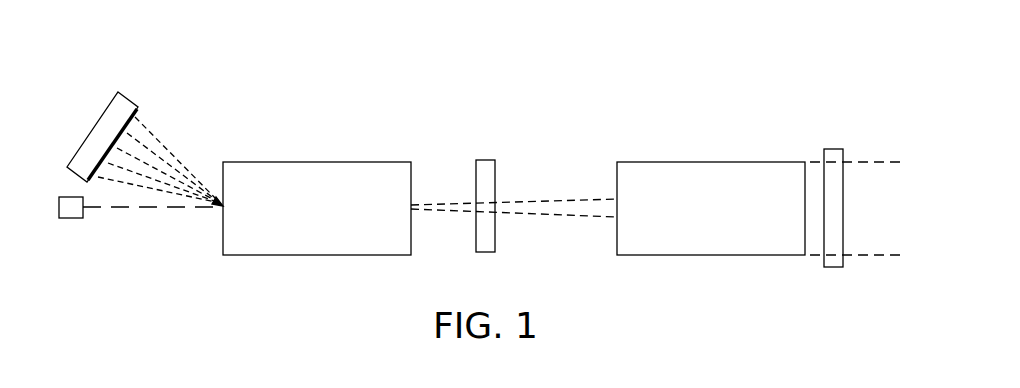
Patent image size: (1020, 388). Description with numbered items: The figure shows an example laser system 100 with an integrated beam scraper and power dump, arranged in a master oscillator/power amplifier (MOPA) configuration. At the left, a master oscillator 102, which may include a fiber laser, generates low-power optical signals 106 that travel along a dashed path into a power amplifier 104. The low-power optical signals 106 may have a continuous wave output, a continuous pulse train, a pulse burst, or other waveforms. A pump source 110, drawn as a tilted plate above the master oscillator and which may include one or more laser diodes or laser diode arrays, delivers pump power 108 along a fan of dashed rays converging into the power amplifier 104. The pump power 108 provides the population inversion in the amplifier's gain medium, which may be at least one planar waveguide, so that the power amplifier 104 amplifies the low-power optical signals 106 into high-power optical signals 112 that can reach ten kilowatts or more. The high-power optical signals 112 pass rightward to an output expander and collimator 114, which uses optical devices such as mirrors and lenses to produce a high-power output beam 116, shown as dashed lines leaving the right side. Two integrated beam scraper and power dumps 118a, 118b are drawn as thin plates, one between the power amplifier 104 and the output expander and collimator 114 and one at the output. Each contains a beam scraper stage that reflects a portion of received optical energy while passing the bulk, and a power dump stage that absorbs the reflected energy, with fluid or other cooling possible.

The laser system 100 is at (635, 74).
The master oscillator 102 is at (72, 220).
The power amplifier 104 is at (317, 160).
The low-power optical signals 106 is at (140, 210).
The pump power 108 is at (191, 128).
The pump source 110 is at (102, 120).
The high-power optical signals 112 is at (552, 202).
The output expander and collimator 114 is at (712, 160).
The high-power output beam 116 is at (865, 162).
The integrated beam scraper and power dump 118a is at (495, 243).
The integrated beam scraper and power dump 118b is at (843, 205).